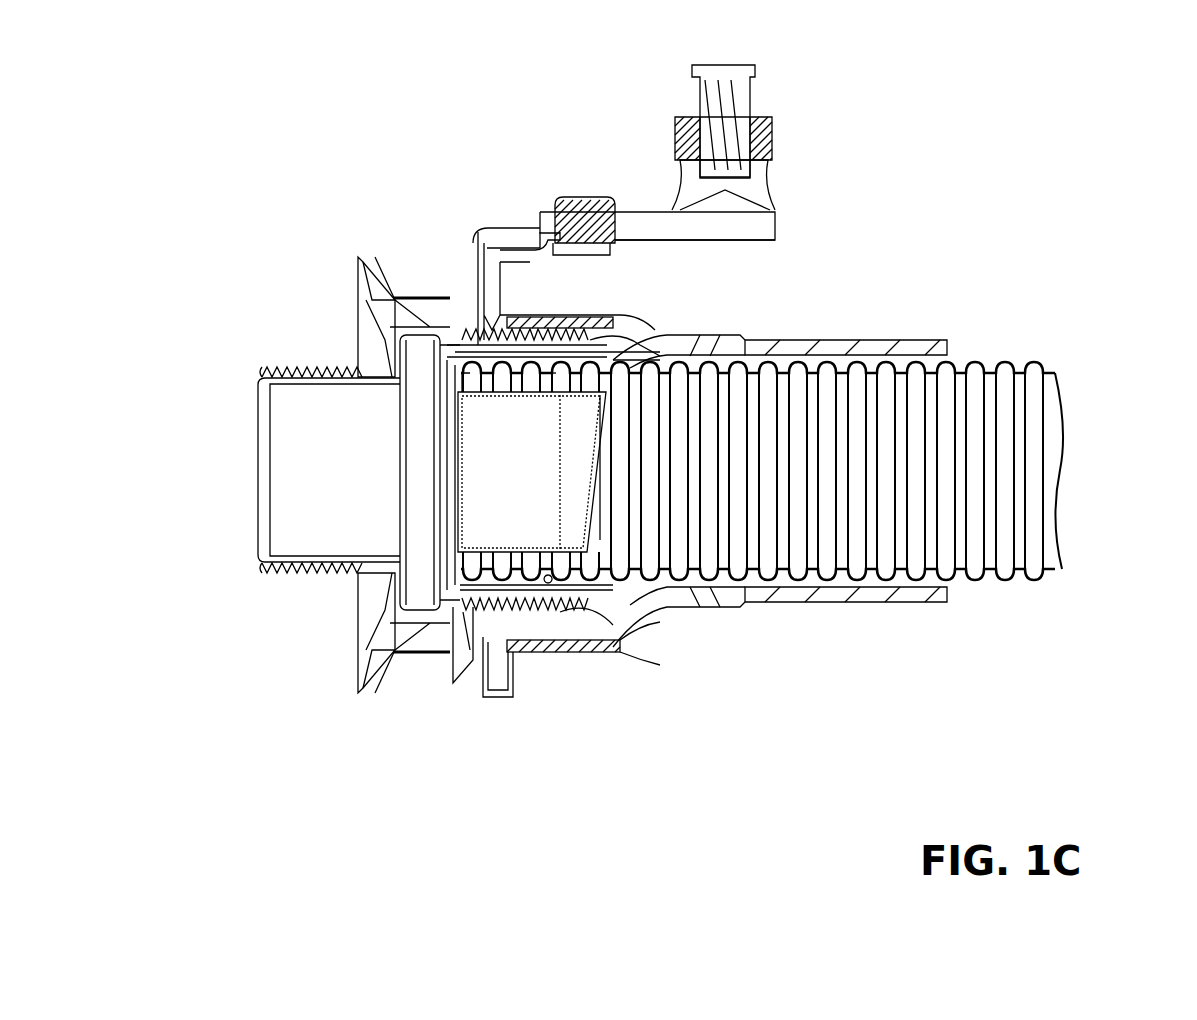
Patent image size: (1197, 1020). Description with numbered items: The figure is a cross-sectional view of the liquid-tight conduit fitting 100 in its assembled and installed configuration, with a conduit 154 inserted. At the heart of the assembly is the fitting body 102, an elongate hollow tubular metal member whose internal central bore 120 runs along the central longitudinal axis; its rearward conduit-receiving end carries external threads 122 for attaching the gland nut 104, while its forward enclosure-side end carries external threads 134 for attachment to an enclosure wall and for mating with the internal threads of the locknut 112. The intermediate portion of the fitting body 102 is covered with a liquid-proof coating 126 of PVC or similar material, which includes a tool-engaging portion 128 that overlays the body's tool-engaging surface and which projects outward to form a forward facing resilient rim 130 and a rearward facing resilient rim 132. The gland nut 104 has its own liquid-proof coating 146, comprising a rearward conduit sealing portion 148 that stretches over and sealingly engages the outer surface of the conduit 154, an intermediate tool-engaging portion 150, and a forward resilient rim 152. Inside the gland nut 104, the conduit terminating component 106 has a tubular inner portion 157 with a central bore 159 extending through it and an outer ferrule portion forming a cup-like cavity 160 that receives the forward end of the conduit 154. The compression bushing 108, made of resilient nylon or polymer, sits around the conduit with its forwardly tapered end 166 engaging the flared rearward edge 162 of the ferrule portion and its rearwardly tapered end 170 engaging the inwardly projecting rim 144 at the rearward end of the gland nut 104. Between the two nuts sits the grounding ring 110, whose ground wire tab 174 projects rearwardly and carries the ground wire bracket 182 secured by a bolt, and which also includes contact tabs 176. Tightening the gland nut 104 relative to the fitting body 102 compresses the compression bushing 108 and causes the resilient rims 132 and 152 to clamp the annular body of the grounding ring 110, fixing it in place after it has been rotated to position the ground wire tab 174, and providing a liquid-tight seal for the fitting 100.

The liquid-tight conduit fitting 100 is at (300, 190).
The fitting body 102 is at (345, 655).
The gland nut 104 is at (572, 330).
The conduit terminating component 106 is at (550, 613).
The compression bushing 108 is at (573, 593).
The grounding ring 110 is at (478, 228).
The locknut 112 is at (367, 352).
The internal central bore 120 is at (329, 470).
The external threads 122 is at (535, 600).
The liquid-proof coating 126 is at (393, 325).
The tool-engaging portion 128 is at (418, 637).
The forward facing resilient rim 130 is at (377, 647).
The rearward facing resilient rim 132 is at (457, 650).
The external threads 134 is at (297, 372).
The inwardly projecting rim 144 is at (617, 352).
The liquid-proof coating 146 is at (820, 350).
The rearward conduit sealing portion 148 is at (883, 345).
The intermediate tool-engaging portion 150 is at (528, 592).
The forward resilient rim 152 is at (497, 668).
The conduit 154 is at (1005, 395).
The tubular inner portion 157 is at (578, 548).
The central bore 159 is at (532, 472).
The cup-like cavity 160 is at (470, 380).
The flared rearward edge 162 is at (547, 395).
The forwardly tapered end 166 is at (538, 358).
The rearwardly tapered end 170 is at (598, 350).
The ground wire tab 174 is at (545, 235).
The contact tabs 176 is at (487, 300).
The ground wire bracket 182 is at (800, 190).